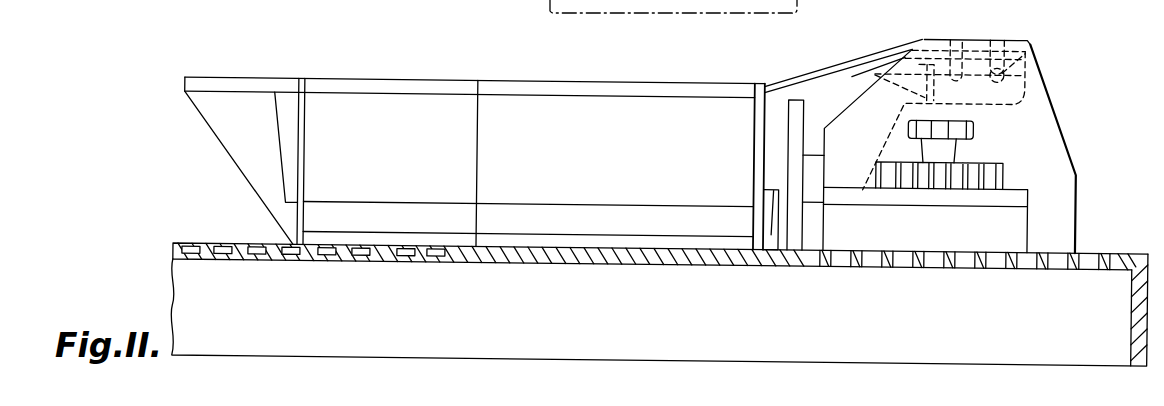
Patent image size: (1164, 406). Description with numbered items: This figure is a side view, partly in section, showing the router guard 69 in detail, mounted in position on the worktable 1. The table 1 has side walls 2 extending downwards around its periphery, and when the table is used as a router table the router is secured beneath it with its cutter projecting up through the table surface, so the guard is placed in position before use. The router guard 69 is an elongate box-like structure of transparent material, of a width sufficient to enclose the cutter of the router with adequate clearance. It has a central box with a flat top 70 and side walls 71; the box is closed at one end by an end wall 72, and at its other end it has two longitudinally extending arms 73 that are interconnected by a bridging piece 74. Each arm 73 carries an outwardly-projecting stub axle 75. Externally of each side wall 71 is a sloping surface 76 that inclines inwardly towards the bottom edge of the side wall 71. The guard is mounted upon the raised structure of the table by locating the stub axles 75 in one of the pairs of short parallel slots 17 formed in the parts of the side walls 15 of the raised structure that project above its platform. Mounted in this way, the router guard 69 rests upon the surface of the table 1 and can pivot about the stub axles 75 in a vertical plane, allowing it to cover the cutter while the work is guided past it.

The table 1 is at (1083, 232).
The side walls 2 is at (1135, 292).
The side walls 15 is at (1017, 135).
The parallel slots 17 is at (993, 31).
The router guard 69 is at (678, 77).
The flat top 70 is at (637, 83).
The side walls 71 is at (565, 83).
The end wall 72 is at (305, 136).
The longitudinally extending arms 73 is at (817, 81).
The bridging piece 74 is at (787, 73).
The stub axle 75 is at (1028, 34).
The sloping surface 76 is at (632, 136).